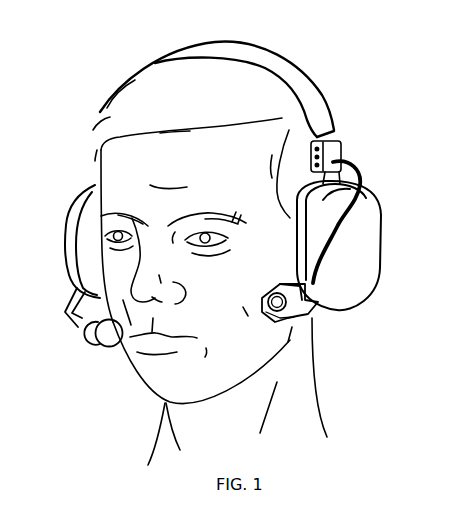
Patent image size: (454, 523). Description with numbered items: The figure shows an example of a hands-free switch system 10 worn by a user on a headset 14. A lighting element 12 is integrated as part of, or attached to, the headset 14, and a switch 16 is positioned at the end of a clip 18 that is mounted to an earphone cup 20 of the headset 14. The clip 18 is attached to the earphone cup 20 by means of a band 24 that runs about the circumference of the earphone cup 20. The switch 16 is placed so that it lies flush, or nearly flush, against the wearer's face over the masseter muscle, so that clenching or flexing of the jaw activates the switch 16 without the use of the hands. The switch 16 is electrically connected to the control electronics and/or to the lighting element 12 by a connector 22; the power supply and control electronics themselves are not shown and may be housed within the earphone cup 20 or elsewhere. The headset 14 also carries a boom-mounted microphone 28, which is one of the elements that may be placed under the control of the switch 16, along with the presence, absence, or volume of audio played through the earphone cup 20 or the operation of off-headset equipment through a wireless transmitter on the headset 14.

The hands-free switch system 10 is at (355, 46).
The lighting element 12 is at (338, 147).
The headset 14 is at (175, 52).
The switch 16 is at (280, 316).
The clip 18 is at (285, 300).
The earphone cup 20 is at (372, 258).
The connector 22 is at (364, 175).
The band 24 is at (318, 312).
The microphone 28 is at (98, 348).